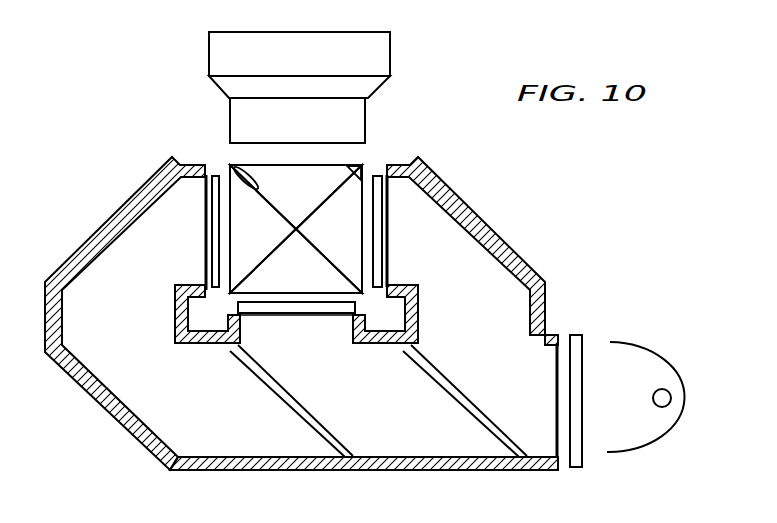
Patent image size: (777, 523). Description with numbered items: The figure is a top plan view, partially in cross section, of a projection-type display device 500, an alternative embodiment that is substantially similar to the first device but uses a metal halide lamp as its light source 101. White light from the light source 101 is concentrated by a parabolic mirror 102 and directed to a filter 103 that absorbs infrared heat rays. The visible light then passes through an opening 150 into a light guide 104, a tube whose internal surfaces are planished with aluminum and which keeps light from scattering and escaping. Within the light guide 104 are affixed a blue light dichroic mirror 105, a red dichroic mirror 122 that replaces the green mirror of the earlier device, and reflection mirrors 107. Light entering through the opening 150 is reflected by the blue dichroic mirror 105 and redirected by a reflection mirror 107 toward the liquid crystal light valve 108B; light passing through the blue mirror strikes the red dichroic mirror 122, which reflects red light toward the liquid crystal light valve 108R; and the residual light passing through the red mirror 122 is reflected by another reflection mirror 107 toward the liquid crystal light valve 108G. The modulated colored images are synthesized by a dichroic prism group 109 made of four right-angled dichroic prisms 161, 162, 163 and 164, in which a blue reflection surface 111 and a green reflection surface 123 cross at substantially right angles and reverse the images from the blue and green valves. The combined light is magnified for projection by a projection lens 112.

The projection-type display device 500 is at (108, 132).
The projection lens 112 is at (372, 44).
The dichroic prism group 109 is at (356, 157).
The green reflection surface 123 is at (353, 176).
The blue reflection surface 111 is at (231, 165).
The reflection mirror 107 is at (103, 238).
The liquid crystal light valve 108G is at (215, 242).
The liquid crystal light valve 108B is at (380, 212).
The liquid crystal light valve 108R is at (314, 311).
The right angled dichroic prism 164 is at (320, 200).
The right angled dichroic prism 163 is at (278, 244).
The right angled dichroic prism 161 is at (350, 236).
The right angled dichroic prism 162 is at (320, 282).
The opening 150 is at (556, 373).
The parabolic mirror 102 is at (638, 342).
The light source 101 is at (668, 394).
The red dichroic mirror 122 is at (320, 435).
The blue light dichroic mirror 105 is at (485, 422).
The light guide 104 is at (500, 462).
The filter 103 is at (575, 470).